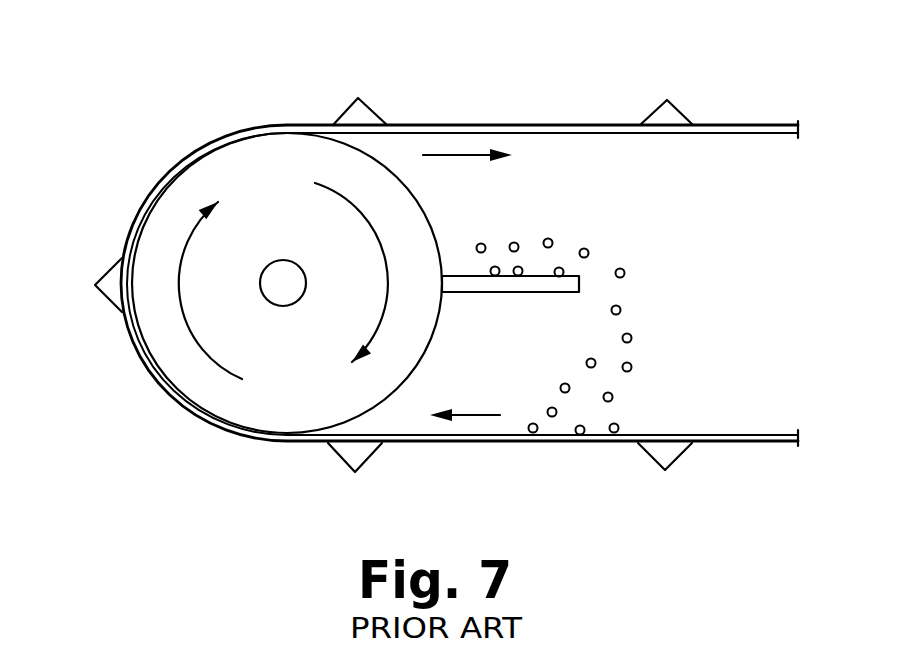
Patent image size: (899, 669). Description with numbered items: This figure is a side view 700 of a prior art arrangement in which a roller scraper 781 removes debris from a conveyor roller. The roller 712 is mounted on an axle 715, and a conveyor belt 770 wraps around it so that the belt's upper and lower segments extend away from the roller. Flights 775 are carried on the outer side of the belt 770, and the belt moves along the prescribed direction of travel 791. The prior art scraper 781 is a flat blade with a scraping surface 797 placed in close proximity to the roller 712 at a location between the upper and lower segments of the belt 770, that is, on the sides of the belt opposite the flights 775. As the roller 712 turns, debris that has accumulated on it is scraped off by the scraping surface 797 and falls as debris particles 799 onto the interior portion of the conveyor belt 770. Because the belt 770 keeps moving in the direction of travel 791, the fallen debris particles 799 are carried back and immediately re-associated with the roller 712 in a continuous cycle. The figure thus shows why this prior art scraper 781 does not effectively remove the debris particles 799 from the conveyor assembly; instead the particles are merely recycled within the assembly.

The side view 700 is at (168, 80).
The conveyor belt 770 is at (448, 125).
The roller 712 is at (185, 362).
The axle 715 is at (260, 285).
The flights 775 is at (358, 98).
The direction of travel 791 is at (467, 155).
The scraping surface 797 is at (445, 275).
The roller scraper 781 is at (510, 293).
The debris particles 799 is at (617, 425).